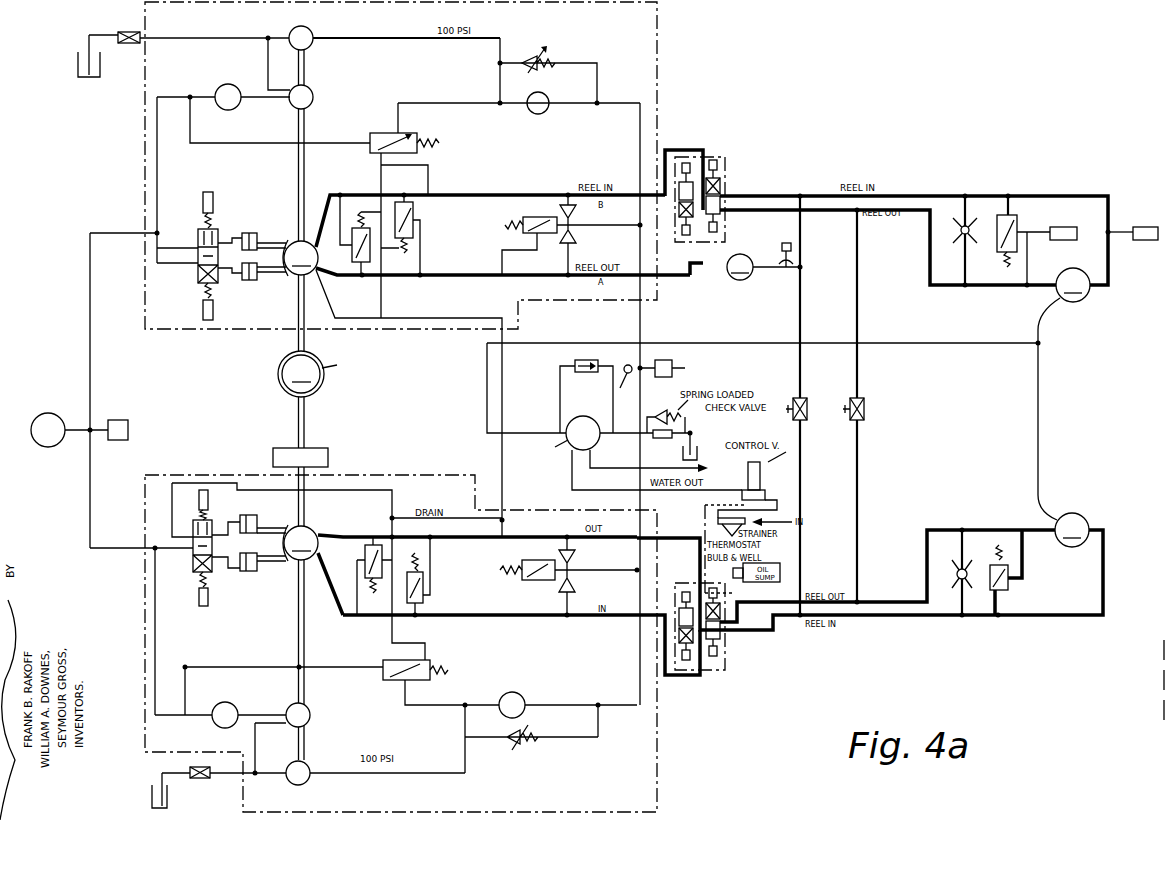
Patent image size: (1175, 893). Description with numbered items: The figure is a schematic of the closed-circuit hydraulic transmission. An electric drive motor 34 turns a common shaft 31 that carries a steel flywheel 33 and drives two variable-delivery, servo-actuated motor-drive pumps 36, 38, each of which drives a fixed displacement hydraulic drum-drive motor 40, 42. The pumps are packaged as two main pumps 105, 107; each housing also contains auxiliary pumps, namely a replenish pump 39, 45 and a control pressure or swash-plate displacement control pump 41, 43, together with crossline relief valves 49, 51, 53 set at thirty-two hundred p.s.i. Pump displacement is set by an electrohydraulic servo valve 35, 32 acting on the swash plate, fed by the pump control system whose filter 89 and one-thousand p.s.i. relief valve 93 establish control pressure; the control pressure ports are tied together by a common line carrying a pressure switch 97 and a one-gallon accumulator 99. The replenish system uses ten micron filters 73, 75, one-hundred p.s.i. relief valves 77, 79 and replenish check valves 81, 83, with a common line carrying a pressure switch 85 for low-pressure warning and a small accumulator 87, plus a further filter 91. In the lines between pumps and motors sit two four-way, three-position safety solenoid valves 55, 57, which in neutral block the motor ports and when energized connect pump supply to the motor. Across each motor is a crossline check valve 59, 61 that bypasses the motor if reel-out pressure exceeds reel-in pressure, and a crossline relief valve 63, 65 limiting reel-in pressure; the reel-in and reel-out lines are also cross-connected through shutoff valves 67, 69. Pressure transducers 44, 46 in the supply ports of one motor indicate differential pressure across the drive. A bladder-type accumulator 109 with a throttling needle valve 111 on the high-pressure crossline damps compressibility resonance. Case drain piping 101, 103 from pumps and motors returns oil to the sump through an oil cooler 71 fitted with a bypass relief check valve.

The common shaft 31 is at (304, 420).
The servo valve 32 is at (193, 546).
The flywheel 33 is at (328, 452).
The electric drive motor 34 is at (330, 374).
The electrohydraulic servo valve 35 is at (198, 234).
The motor-drive pump 36 is at (487, 235).
The motor-drive pump 38 is at (460, 570).
The replenish pump 39 is at (310, 29).
The hydraulic drum-drive motor 40 is at (917, 265).
The control pressure pump 41 is at (311, 88).
The hydraulic drum-drive motor 42 is at (870, 571).
The control flow pump 43 is at (310, 705).
The pressure transducer 44 is at (1151, 241).
The replenish pump 45 is at (310, 765).
The pressure transducer 46 is at (1065, 227).
The pump crossline relief valve 49 is at (414, 207).
The pump crossline relief valve 51 is at (363, 552).
The pump crossline relief valve 53 is at (424, 601).
The safety solenoid valve 55 is at (732, 189).
The safety solenoid valve 57 is at (733, 659).
The crossline check valve 59 is at (958, 236).
The crossline check valve 61 is at (958, 572).
The crossline relief valve 63 is at (1018, 217).
The crossline relief valve 65 is at (1010, 584).
The shutoff valve 67 is at (805, 398).
The shutoff valve 69 is at (862, 398).
The oil cooler 71 is at (580, 417).
The filter 73 is at (78, 67).
The filter 75 is at (520, 694).
The relief valve 77 is at (548, 70).
The relief valve 79 is at (540, 747).
The replenish check valve 81 is at (552, 242).
The replenish check valve 83 is at (521, 591).
The pressure switch 85 is at (699, 363).
The replenish system accumulator 87 is at (622, 384).
The filter 89 is at (226, 110).
The filter 91 is at (228, 702).
The relief valve 93 is at (385, 132).
The pressure switch 97 is at (125, 423).
The accumulator 99 is at (33, 445).
The case drain piping 101 is at (480, 318).
The case drain piping 103 is at (1040, 408).
The main pump 105 is at (658, 32).
The main pump 107 is at (653, 770).
The bladder-type accumulator 109 is at (756, 275).
The needle valve 111 is at (786, 243).